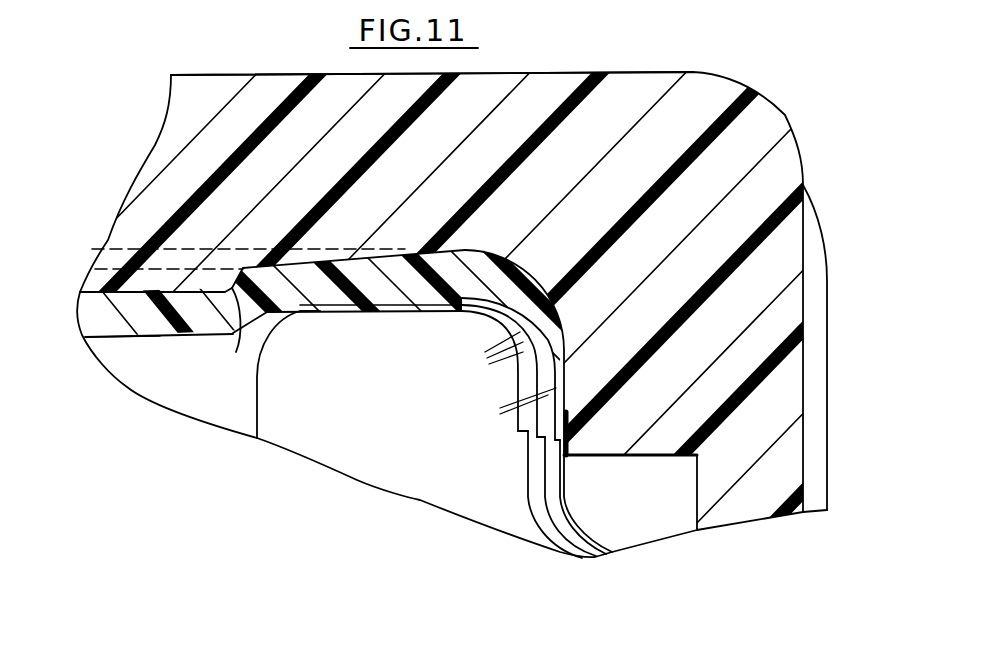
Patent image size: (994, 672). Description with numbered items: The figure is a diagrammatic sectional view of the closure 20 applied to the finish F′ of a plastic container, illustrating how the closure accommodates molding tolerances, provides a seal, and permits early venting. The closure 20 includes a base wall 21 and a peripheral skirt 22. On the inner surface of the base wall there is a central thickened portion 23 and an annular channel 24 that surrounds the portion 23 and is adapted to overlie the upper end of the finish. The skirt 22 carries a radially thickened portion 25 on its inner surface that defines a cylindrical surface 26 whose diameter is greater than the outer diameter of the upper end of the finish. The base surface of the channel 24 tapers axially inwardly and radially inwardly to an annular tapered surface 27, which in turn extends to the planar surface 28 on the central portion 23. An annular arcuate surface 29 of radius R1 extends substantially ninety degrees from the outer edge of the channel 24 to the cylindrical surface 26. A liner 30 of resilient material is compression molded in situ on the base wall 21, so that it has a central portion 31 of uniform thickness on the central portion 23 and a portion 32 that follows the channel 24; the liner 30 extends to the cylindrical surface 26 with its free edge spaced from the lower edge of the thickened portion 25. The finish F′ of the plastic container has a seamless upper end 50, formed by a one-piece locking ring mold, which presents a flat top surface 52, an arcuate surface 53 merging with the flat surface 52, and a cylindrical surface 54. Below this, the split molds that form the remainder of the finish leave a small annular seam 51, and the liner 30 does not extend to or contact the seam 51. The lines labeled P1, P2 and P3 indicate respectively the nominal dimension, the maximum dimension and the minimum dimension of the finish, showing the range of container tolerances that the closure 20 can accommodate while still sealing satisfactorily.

The closure 20 is at (650, 54).
The base wall 21 is at (551, 70).
The peripheral skirt 22 is at (783, 485).
The central thickened portion 23 is at (150, 170).
The annular channel 24 is at (302, 262).
The radially thickened portion 25 is at (655, 440).
The cylindrical surface 26 is at (568, 412).
The annular tapered surface 27 is at (236, 352).
The planar surface 28 is at (85, 318).
The annular arcuate surface 29 is at (487, 254).
The liner 30 is at (185, 340).
The central portion of liner 31 is at (125, 340).
The channel portion of liner 32 is at (394, 248).
The seamless upper end 50 is at (273, 343).
The annular seam 51 is at (522, 430).
The flat top surface 52 is at (390, 305).
The arcuate surface 53 is at (528, 265).
The cylindrical surface of finish 54 is at (520, 348).
The nominal dimension P1 is at (565, 545).
The maximum dimension P2 is at (568, 518).
The minimum dimension P3 is at (535, 518).
The finish F′ is at (252, 422).